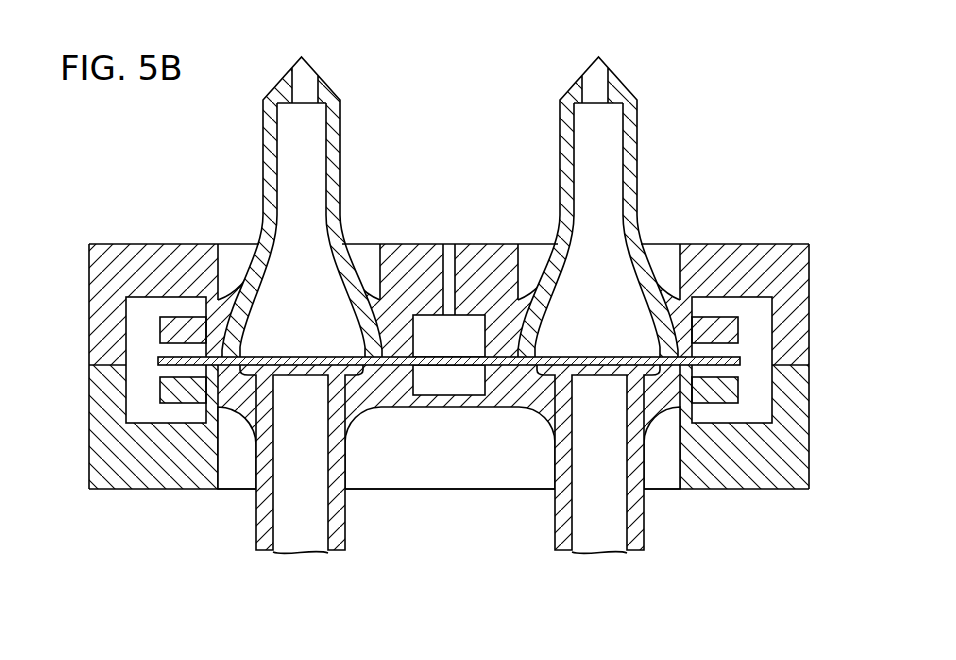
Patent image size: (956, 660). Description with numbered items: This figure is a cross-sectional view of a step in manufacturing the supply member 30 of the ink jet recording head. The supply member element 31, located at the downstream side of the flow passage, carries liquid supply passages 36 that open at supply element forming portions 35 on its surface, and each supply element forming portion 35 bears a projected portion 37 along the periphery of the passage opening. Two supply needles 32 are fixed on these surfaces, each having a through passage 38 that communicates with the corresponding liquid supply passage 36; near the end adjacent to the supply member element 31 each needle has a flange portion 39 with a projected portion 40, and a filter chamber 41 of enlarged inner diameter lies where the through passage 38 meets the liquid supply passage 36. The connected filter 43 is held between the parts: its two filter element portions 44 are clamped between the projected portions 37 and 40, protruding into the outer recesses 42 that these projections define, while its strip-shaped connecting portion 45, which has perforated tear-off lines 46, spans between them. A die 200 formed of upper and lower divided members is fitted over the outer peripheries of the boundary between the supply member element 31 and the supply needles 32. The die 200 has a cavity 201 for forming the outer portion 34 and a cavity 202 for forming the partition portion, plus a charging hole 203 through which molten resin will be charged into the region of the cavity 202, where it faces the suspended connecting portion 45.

The supply member 30 is at (752, 68).
The supply element forming portion 35 is at (434, 100).
The through passage 38 is at (290, 138).
The supply needle 32 is at (627, 128).
The die 200 is at (120, 245).
The cavity 201 is at (790, 250).
The cavity 202 is at (478, 292).
The charging hole 203 is at (451, 280).
The projected portion 40 is at (223, 345).
The filter chamber 41 is at (338, 300).
The flange portion 39 is at (390, 313).
The filter element portion 44 is at (595, 356).
The connected filter 43 is at (746, 344).
The outer recess 42 is at (162, 373).
The outer portion 34 is at (755, 410).
The projected portion 37 is at (230, 376).
The liquid supply passage 36 is at (291, 462).
The supply member element 31 is at (648, 404).
The connecting portion 45 is at (450, 372).
The tear-off line 46 is at (482, 372).